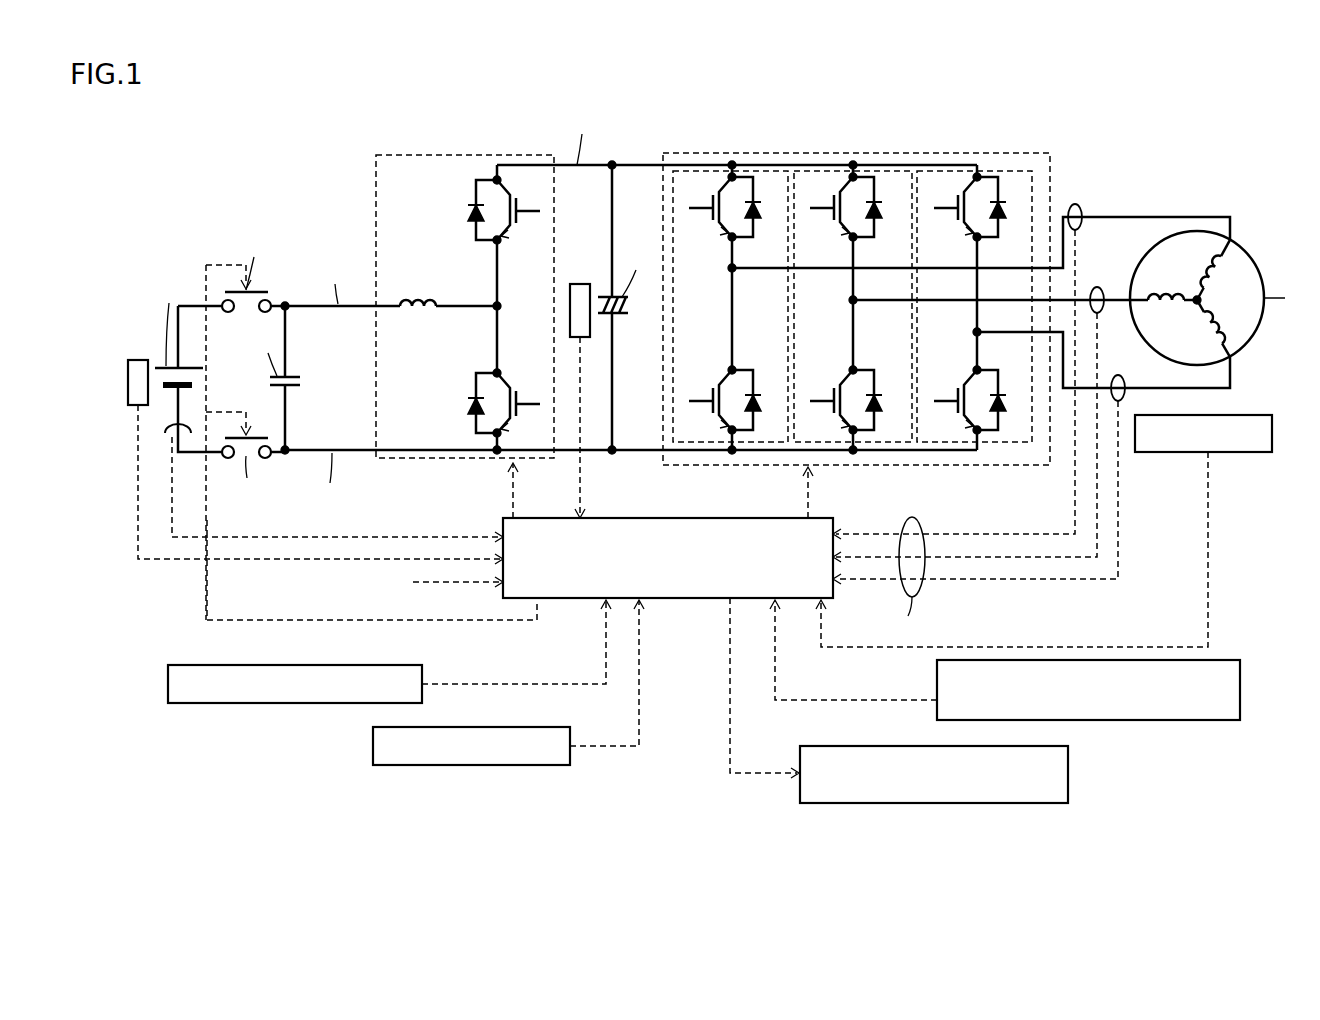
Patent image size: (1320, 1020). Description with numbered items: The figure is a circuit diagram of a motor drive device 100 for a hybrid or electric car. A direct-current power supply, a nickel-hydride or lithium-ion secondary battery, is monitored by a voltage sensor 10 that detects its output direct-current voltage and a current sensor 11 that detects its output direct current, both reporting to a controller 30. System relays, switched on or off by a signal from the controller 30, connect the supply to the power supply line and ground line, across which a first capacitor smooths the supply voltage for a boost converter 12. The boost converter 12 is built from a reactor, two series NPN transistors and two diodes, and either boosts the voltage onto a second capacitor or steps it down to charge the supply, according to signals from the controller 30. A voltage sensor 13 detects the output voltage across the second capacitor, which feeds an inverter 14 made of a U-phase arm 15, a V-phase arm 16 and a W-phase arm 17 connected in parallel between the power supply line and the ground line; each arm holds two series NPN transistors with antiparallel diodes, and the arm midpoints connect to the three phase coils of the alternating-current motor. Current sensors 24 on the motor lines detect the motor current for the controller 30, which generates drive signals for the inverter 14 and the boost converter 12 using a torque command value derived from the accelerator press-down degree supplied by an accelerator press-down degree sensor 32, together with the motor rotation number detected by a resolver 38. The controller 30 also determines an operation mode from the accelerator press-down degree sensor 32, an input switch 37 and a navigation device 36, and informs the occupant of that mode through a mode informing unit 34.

The motor drive device 100 is at (1100, 96).
The voltage sensor 10 is at (140, 360).
The current sensor 11 is at (172, 436).
The boost converter 12 is at (376, 186).
The voltage sensor 13 is at (580, 284).
The inverter 14 is at (697, 153).
The U-phase arm 15 is at (763, 171).
The V-phase arm 16 is at (885, 171).
The W-phase arm 17 is at (1008, 171).
The current sensors 24 is at (1075, 204).
The controller 30 is at (668, 600).
The accelerator press-down degree sensor 32 is at (1142, 722).
The mode informing unit 34 is at (926, 805).
The navigation device 36 is at (294, 705).
The input switch 37 is at (472, 767).
The resolver 38 is at (1274, 433).